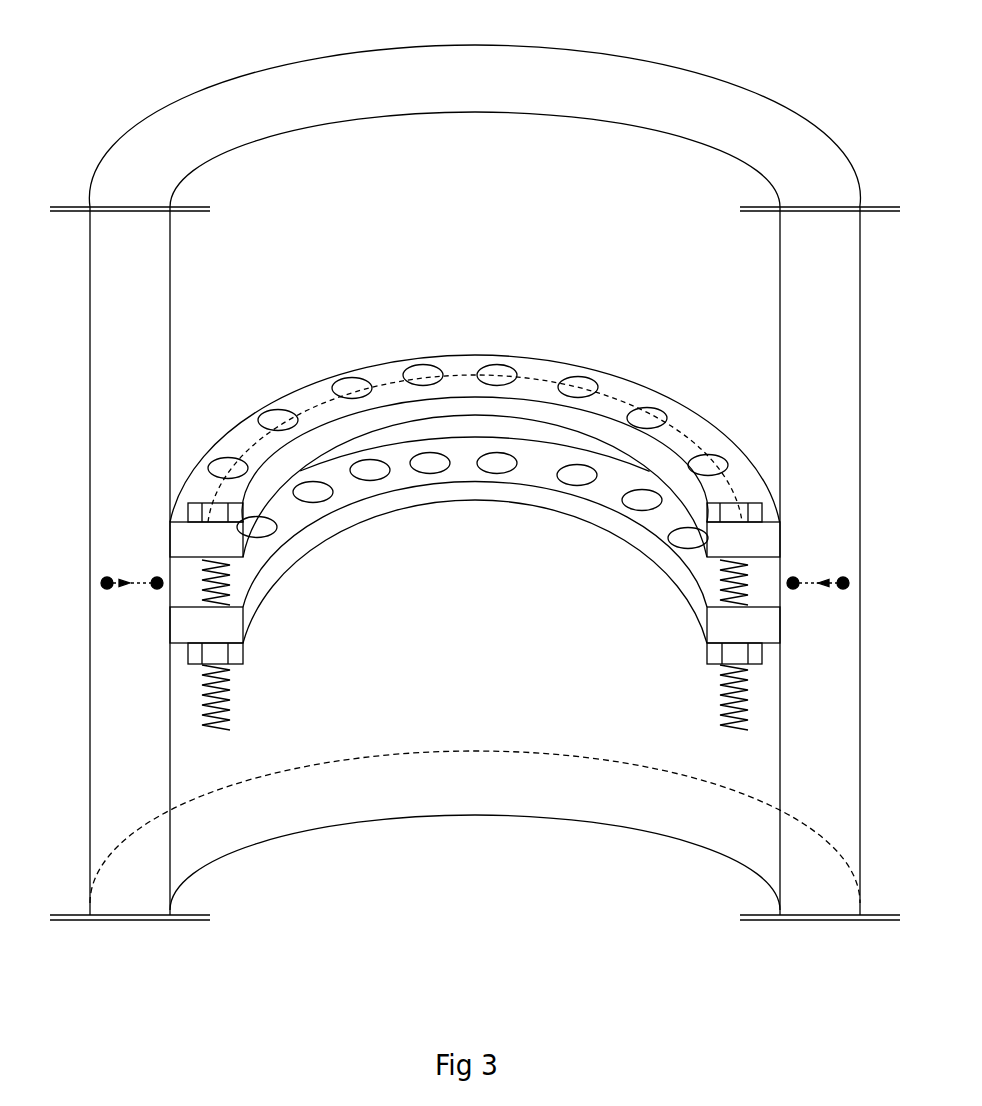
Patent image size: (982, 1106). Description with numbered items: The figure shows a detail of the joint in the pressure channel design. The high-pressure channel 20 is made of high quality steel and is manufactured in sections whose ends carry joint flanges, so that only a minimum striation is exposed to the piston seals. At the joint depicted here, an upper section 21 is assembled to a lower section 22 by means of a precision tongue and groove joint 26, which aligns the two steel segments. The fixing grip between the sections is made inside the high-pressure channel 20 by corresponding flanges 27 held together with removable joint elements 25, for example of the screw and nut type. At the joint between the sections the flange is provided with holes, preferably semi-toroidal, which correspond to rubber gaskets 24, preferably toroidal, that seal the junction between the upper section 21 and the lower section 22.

The high-pressure channel 20 is at (717, 83).
The upper section 21 is at (99, 365).
The lower section 22 is at (94, 740).
The rubber gaskets 24 is at (153, 588).
The removable joint elements 25 is at (194, 594).
The precision tongue and groove joint 26 is at (116, 576).
The flanges 27 is at (548, 465).